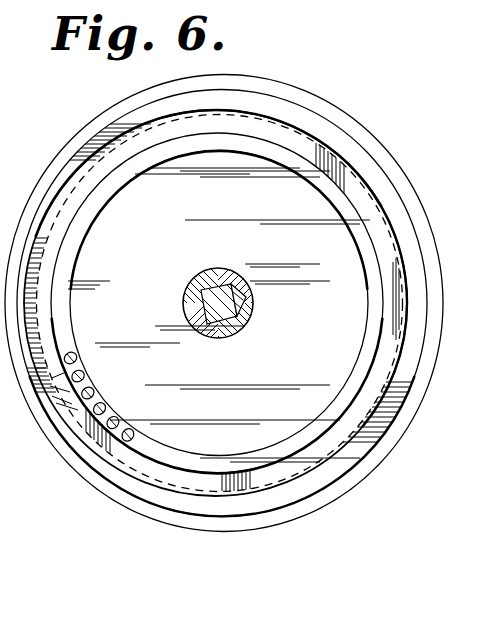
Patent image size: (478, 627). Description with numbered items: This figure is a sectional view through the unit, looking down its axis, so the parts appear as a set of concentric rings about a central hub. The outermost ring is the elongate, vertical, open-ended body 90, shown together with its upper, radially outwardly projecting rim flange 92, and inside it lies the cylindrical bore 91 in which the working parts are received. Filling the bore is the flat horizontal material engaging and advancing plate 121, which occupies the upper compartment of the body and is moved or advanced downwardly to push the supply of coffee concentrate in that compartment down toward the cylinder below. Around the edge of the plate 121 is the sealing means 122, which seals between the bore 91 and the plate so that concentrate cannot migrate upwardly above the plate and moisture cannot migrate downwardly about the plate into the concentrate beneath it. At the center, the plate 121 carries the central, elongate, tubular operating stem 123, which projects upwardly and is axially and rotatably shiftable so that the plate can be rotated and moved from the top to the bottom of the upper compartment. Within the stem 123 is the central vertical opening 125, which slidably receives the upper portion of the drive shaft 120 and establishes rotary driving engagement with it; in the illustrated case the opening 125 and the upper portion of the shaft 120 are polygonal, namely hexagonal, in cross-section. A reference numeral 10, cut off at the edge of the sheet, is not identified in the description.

The body 90 is at (402, 166).
The cylindrical bore 91 is at (320, 143).
The rim flange 92 is at (320, 100).
The assembly 10 is at (476, 240).
The drive shaft 120 is at (262, 252).
The material engaging and advancing plate 121 is at (219, 315).
The sealing means 122 is at (80, 371).
The operating stem 123 is at (241, 330).
The central vertical opening 125 is at (238, 303).